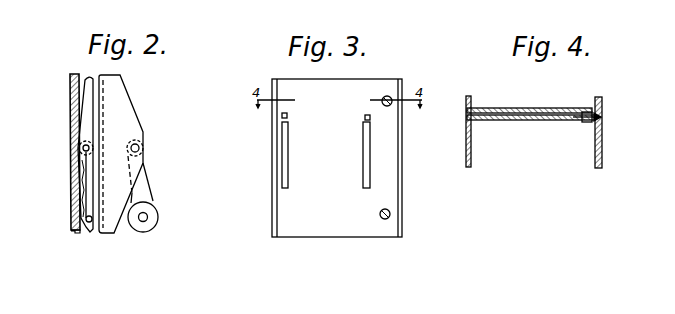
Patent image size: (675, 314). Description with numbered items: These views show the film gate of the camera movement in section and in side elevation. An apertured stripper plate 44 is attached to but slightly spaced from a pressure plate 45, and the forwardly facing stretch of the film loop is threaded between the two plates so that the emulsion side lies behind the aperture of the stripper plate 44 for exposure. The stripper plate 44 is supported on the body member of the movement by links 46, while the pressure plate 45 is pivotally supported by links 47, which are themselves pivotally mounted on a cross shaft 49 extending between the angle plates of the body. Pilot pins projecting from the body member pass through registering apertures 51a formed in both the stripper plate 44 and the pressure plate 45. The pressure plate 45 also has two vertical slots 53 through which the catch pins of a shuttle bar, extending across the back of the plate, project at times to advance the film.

In FIG. 2, the stripper plate 44 is at (90, 108).
In FIG. 4, the stripper plate 44 is at (502, 108).
In FIG. 2, the pressure plate 45 is at (105, 123).
In FIG. 3, the pressure plate 45 is at (322, 227).
In FIG. 4, the pressure plate 45 is at (532, 120).
In FIG. 2, the links 46 is at (84, 205).
In FIG. 2, the links 47 is at (146, 188).
In FIG. 2, the cross shaft 49 is at (146, 217).
In FIG. 3, the registering apertures 51a is at (362, 117).
In FIG. 3, the vertical slots 53 is at (362, 158).